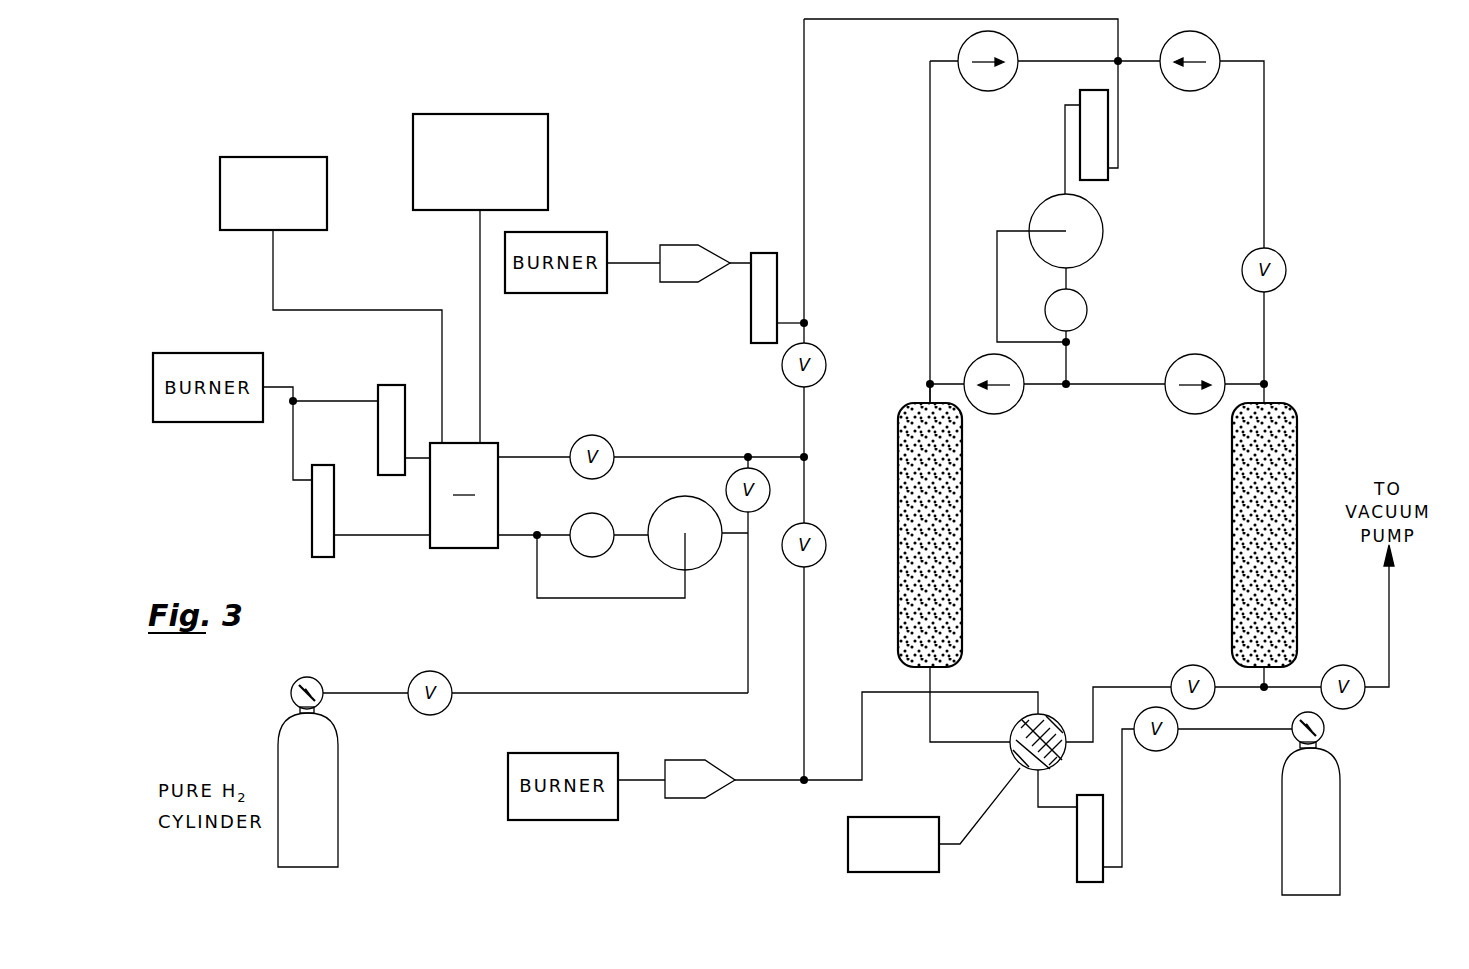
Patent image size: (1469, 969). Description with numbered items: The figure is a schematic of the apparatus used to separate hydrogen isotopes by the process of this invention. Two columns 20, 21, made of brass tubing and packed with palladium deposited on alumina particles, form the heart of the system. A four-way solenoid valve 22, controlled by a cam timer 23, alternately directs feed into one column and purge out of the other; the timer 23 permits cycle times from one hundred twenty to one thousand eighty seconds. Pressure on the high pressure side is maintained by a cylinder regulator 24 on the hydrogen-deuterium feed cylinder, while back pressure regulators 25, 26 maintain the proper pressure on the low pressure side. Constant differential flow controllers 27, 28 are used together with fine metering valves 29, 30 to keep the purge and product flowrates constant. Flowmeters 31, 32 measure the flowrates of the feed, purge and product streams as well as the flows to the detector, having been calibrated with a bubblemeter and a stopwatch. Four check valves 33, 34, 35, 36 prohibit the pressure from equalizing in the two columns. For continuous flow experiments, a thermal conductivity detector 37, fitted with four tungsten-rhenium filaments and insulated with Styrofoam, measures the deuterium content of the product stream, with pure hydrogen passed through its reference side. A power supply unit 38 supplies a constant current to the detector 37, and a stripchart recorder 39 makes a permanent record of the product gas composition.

The column 20 is at (962, 497).
The column 21 is at (1297, 488).
The 4-way solenoid valve 22 is at (1058, 713).
The cam timer 23 is at (848, 828).
The cylinder regulator 24 is at (1325, 730).
The back pressure regulator 25 is at (712, 276).
The back pressure regulator 26 is at (683, 798).
The constant differential flow controller 27 is at (1103, 232).
The constant differential flow controller 28 is at (705, 565).
The fine metering valve 29 is at (1087, 310).
The fine metering valve 30 is at (582, 556).
The flowmeter 31 is at (1077, 863).
The flowmeter 32 is at (751, 313).
The check valve 33 is at (1010, 412).
The check valve 34 is at (1170, 410).
The check valve 35 is at (976, 90).
The check valve 36 is at (1178, 89).
The thermal conductivity detector 37 is at (464, 495).
The power supply unit 38 is at (220, 207).
The stripchart recorder 39 is at (548, 121).